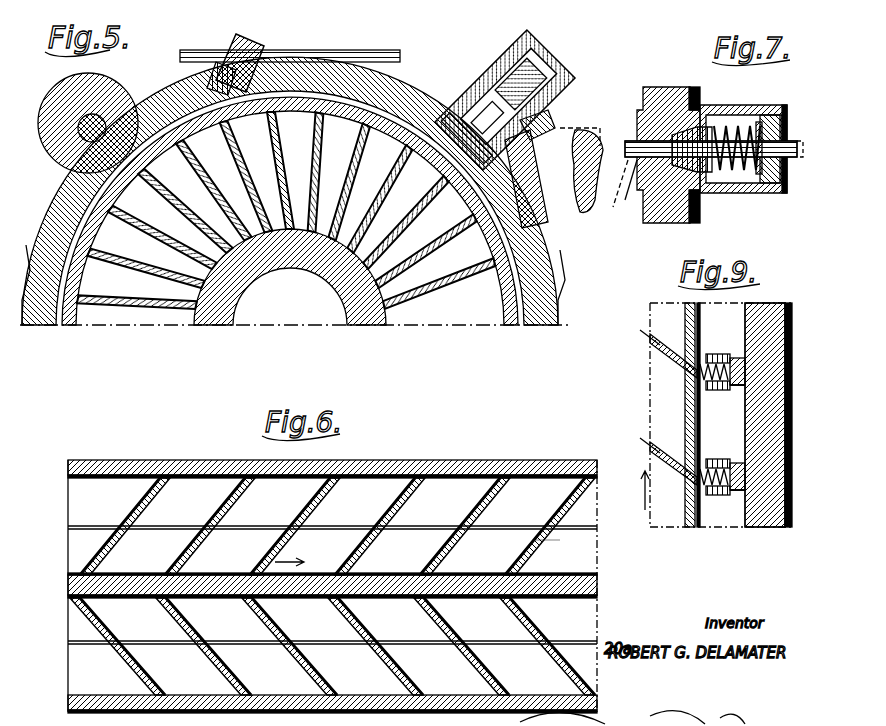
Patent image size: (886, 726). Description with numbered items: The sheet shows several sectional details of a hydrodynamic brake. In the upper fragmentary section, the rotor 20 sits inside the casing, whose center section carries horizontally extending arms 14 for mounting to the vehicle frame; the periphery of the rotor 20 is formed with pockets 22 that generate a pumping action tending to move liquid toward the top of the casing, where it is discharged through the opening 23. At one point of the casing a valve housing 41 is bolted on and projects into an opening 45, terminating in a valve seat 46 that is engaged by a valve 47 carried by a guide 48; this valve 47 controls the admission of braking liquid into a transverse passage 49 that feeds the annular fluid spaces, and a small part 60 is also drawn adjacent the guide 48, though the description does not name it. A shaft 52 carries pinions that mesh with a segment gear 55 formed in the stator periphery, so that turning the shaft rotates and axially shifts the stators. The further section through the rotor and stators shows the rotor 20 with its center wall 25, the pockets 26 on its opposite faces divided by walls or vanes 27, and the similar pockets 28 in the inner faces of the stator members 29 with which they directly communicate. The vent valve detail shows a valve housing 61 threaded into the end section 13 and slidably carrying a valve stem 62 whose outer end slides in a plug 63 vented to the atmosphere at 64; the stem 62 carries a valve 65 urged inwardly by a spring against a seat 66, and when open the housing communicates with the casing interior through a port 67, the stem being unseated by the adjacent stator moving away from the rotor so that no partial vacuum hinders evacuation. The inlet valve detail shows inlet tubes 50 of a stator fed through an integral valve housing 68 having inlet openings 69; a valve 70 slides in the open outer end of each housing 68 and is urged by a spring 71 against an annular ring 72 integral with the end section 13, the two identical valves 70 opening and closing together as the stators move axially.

In FIG. 7, the end section 13 is at (688, 87).
In FIG. 9, the end section 13 is at (795, 312).
In FIG. 5, the horizontally extending arm 14 is at (548, 250).
In FIG. 5, the rotor 20 is at (288, 262).
In FIG. 6, the rotor 20 is at (208, 575).
In FIG. 5, the pocket 22 is at (150, 192).
In FIG. 5, the opening 23 is at (225, 58).
In FIG. 6, the center wall 25 is at (540, 582).
In FIG. 5, the pocket 26 is at (311, 182).
In FIG. 6, the pocket 26 is at (305, 587).
In FIG. 5, the wall or vane 27 is at (292, 174).
In FIG. 6, the wall or vane 27 is at (503, 560).
In FIG. 6, the pocket 28 is at (344, 584).
In FIG. 6, the stator member 29 is at (597, 492).
In FIG. 5, the valve housing 41 is at (505, 52).
In FIG. 5, the opening 45 is at (540, 130).
In FIG. 5, the valve seat 46 is at (468, 88).
In FIG. 5, the valve 47 is at (556, 170).
In FIG. 5, the guide 48 is at (545, 85).
In FIG. 5, the transverse passage 49 is at (470, 182).
In FIG. 9, the inlet tube 50 is at (670, 340).
In FIG. 5, the shaft 52 is at (105, 95).
In FIG. 5, the segment gear 55 is at (590, 128).
In FIG. 5, the pin 60 is at (478, 116).
In FIG. 7, the valve housing 61 is at (742, 124).
In FIG. 7, the valve stem 62 is at (745, 193).
In FIG. 7, the plug 63 is at (780, 185).
In FIG. 7, the vent 64 is at (780, 125).
In FIG. 7, the valve 65 is at (708, 125).
In FIG. 7, the seat 66 is at (690, 205).
In FIG. 7, the port 67 is at (628, 208).
In FIG. 9, the valve housing 68 is at (734, 358).
In FIG. 9, the inlet opening 69 is at (710, 354).
In FIG. 9, the valve 70 is at (738, 386).
In FIG. 9, the spring 71 is at (712, 390).
In FIG. 9, the annular ring 72 is at (742, 427).